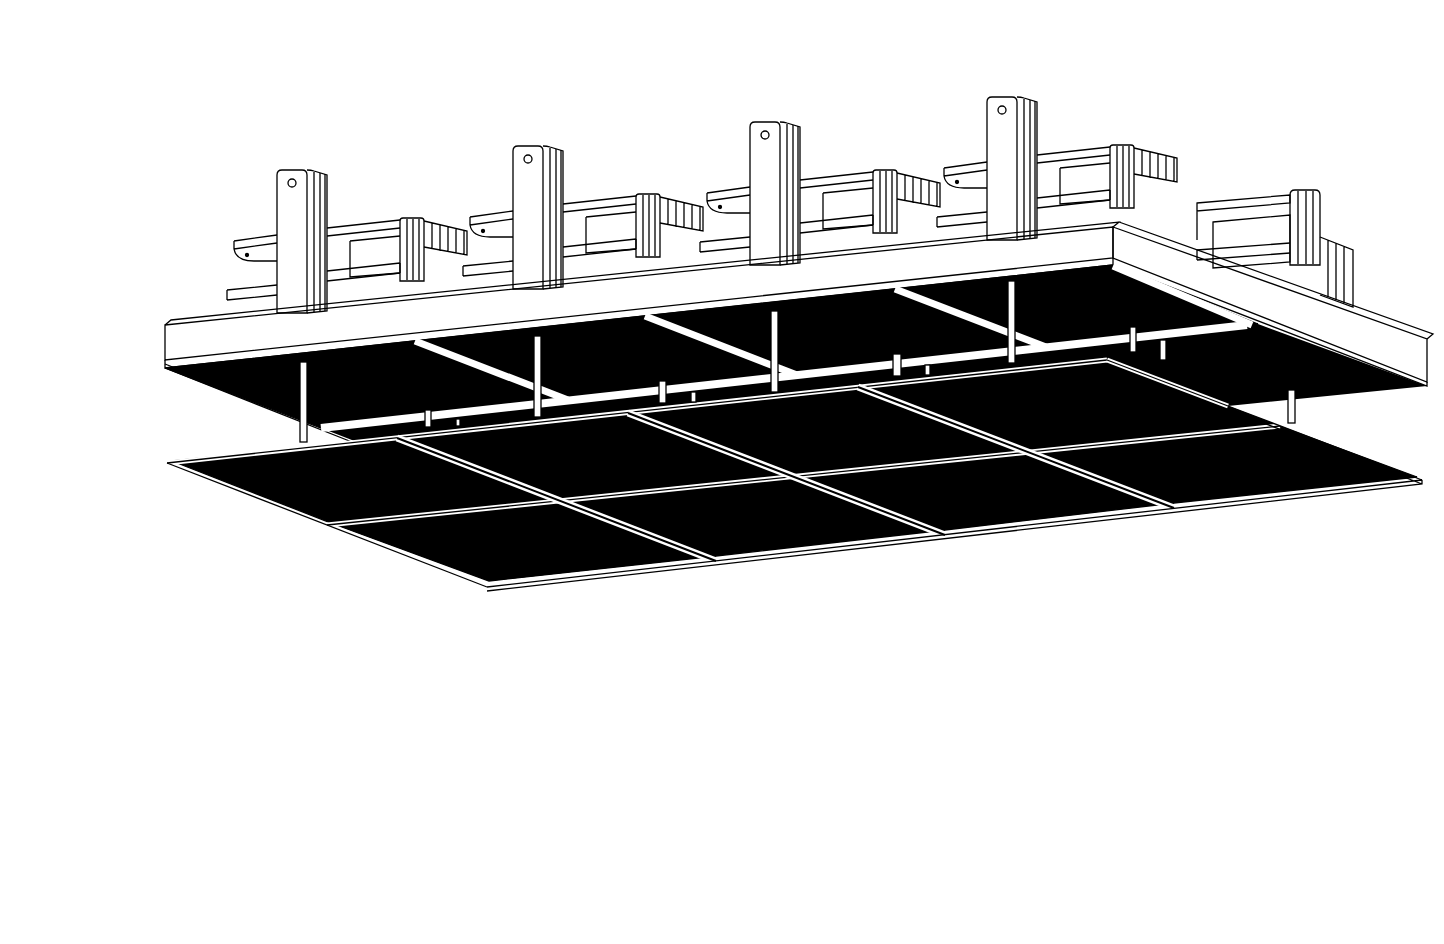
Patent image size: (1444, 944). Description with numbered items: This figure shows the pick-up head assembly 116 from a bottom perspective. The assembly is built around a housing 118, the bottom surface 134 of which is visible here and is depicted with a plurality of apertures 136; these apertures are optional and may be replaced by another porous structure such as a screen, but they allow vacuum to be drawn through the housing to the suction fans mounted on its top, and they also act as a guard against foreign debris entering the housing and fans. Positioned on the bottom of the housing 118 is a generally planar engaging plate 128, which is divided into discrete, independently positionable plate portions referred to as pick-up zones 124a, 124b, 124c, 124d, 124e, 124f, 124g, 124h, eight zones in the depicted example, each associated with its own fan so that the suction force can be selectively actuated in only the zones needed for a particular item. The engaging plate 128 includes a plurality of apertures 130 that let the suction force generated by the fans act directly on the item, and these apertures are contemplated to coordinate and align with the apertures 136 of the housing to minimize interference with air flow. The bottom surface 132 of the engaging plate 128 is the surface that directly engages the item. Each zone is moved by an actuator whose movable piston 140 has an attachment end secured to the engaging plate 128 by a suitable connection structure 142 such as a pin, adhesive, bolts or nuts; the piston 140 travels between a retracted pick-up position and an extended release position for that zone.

The pick-up head assembly 116 is at (609, 74).
The housing 118 is at (193, 357).
The pick-up zone 124a is at (525, 582).
The pick-up zone 124b is at (873, 550).
The pick-up zone 124c is at (1088, 528).
The pick-up zone 124d is at (1320, 495).
The pick-up zone 124e is at (262, 500).
The pick-up zone 124f is at (448, 567).
The pick-up zone 124g is at (1310, 428).
The pick-up zone 124h is at (1247, 328).
The engaging plate 128 is at (750, 503).
The apertures 130 is at (630, 580).
The bottom surface 132 is at (712, 575).
The bottom surface of the housing 134 is at (753, 349).
The apertures 136 is at (247, 398).
The piston 140 is at (300, 433).
The connection structure 142 is at (290, 510).